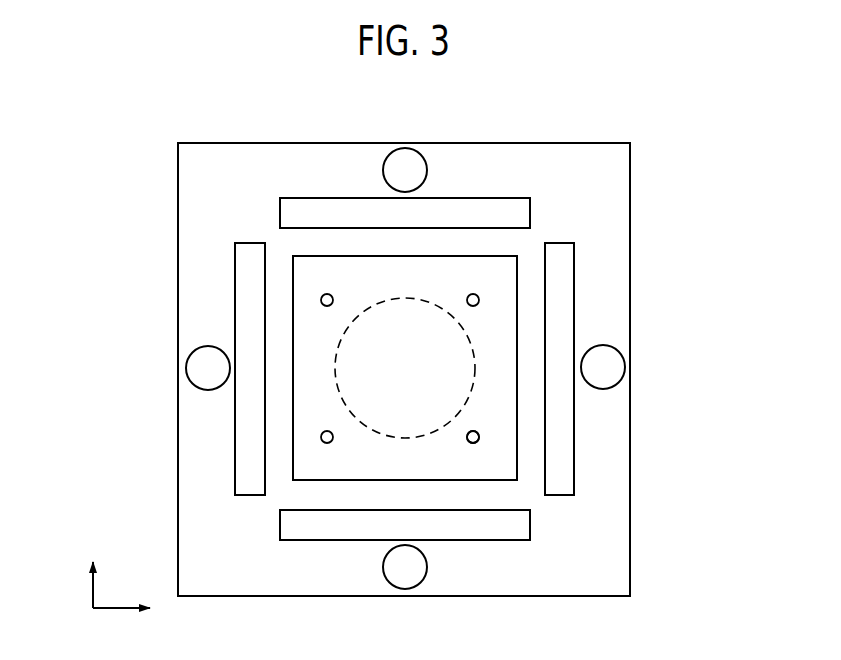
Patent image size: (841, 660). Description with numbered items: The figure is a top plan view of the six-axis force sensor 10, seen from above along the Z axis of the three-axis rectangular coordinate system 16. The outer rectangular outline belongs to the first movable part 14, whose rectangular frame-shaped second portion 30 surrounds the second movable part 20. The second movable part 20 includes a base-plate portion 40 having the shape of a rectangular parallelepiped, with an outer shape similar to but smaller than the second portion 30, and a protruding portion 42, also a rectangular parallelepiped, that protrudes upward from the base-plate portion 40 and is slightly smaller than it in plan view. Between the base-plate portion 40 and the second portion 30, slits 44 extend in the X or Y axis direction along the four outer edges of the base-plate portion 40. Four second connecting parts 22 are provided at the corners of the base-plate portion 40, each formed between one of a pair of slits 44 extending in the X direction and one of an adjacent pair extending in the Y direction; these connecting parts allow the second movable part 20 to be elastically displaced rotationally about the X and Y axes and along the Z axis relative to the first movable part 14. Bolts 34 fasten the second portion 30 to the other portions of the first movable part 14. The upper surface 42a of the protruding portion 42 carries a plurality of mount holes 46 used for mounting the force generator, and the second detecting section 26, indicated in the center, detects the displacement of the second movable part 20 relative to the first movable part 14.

The six-axis force sensor 10 is at (158, 169).
The first movable part 14 is at (632, 493).
The three-axis rectangular coordinate system 16 is at (74, 590).
The second movable part 20 is at (502, 319).
The second connecting part 22 is at (257, 229).
The second detecting section 26 is at (427, 320).
The second portion 30 is at (618, 572).
The bolt 34 is at (203, 370).
The base-plate portion 40 is at (283, 318).
The protruding portion 42 is at (452, 465).
The surface 42a is at (353, 460).
The slit 44 is at (242, 437).
The mount hole 46 is at (478, 441).